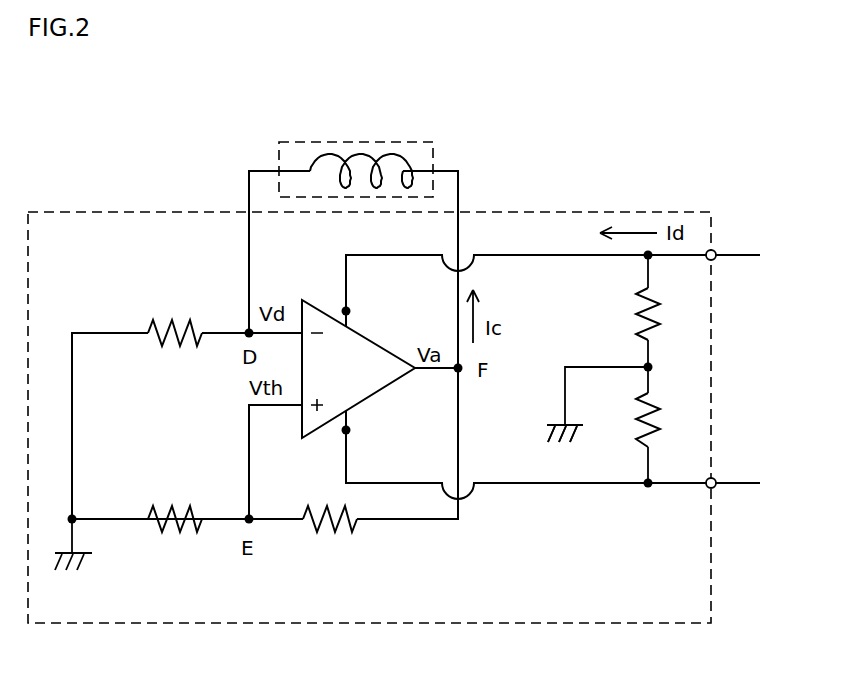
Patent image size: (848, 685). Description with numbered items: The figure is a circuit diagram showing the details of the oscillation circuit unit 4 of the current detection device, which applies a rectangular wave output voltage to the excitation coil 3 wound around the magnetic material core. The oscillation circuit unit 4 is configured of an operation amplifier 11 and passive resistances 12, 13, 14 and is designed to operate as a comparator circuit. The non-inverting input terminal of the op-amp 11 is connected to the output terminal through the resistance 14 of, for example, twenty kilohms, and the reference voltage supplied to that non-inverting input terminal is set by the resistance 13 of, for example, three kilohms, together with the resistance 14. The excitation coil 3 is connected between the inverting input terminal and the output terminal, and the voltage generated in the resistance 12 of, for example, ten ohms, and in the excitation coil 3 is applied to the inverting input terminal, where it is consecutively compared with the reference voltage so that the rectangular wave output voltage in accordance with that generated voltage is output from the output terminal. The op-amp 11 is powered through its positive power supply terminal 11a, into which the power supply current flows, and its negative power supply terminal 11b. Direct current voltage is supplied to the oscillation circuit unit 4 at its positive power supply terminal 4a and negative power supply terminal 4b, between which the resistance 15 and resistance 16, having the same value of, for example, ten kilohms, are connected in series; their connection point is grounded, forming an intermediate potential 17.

The excitation coil 3 is at (365, 153).
The oscillation circuit unit 4 is at (542, 210).
The positive power supply terminal 4a is at (729, 240).
The negative power supply terminal 4b is at (730, 469).
The operation amplifier 11 is at (380, 347).
The positive power supply terminal 11a is at (551, 290).
The negative power supply terminal 11b is at (551, 455).
The resistance 12 is at (172, 313).
The resistance 13 is at (177, 527).
The resistance 14 is at (335, 527).
The resistance 15 is at (633, 307).
The resistance 16 is at (633, 417).
The intermediate potential 17 is at (550, 440).